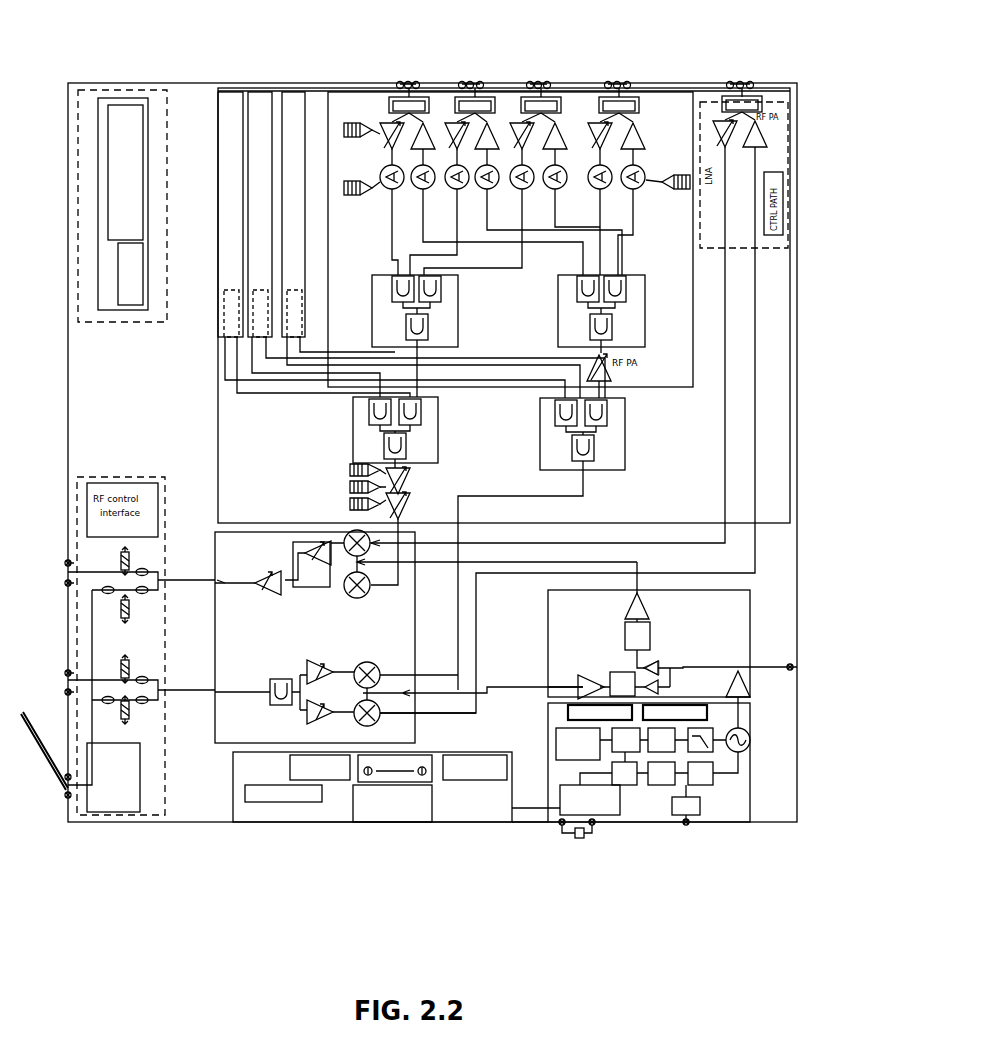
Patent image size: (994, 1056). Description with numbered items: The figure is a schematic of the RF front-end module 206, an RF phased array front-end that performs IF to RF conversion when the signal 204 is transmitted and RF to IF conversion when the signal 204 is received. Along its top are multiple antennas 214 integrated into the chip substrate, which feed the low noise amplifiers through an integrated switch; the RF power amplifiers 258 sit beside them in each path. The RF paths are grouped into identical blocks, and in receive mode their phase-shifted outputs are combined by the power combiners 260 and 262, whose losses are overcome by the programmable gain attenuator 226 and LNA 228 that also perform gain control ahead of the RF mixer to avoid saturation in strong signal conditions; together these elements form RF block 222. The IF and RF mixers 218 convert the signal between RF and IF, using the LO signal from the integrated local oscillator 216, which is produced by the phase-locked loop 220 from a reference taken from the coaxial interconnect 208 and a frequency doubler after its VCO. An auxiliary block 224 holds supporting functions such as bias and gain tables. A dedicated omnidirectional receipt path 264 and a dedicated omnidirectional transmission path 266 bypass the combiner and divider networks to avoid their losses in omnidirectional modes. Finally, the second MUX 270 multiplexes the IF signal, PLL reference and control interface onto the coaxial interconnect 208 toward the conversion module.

The signal 204 is at (31, 706).
The RF front-end module 206 is at (68, 270).
The coaxial interconnect 208 is at (48, 775).
The antennas 214 is at (740, 84).
The local oscillator 216 is at (672, 645).
The IF and RF mixers 218 is at (397, 636).
The phase-locked loop 220 is at (631, 770).
The RF block 222 is at (504, 305).
The auxiliary (AUX) block 224 is at (372, 787).
The programmable gain attenuator 226 is at (420, 487).
The LNA 228 is at (618, 320).
The RF power amplifiers 258 is at (550, 130).
The power combiner 260 is at (558, 313).
The power combiner 262 is at (438, 430).
The dedicated omnidirectional receipt path 264 is at (725, 420).
The dedicated omnidirectional transmission path 266 is at (756, 378).
The second MUX 270 is at (113, 777).